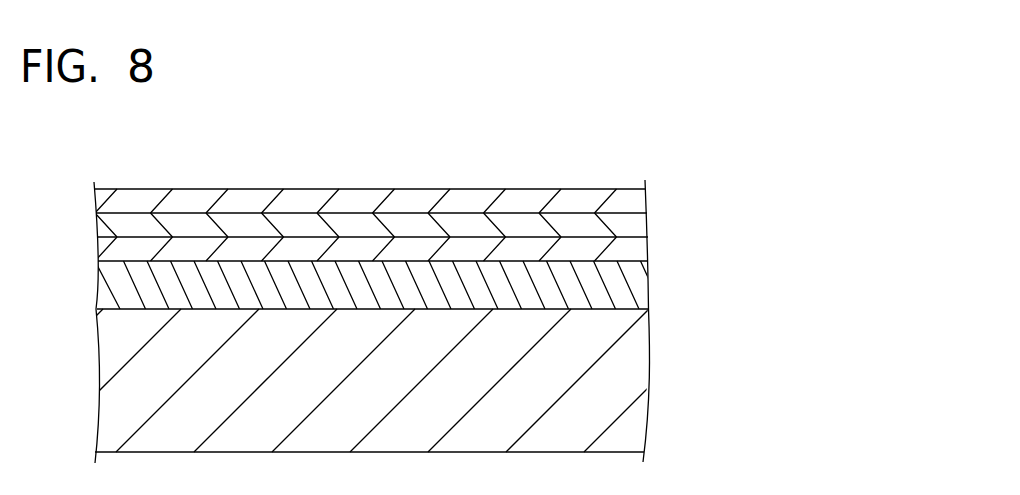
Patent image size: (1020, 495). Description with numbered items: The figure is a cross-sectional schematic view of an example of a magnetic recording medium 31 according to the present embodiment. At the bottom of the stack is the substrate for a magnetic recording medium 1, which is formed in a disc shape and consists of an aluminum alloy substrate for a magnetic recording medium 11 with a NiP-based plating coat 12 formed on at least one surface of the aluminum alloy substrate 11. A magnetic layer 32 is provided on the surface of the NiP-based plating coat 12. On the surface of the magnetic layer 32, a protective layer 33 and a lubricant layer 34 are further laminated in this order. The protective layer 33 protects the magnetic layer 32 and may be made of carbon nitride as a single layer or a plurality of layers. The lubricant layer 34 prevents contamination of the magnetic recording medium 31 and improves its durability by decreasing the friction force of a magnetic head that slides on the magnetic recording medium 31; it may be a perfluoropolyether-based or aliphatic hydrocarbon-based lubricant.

The magnetic recording medium 31 is at (578, 112).
The lubricant layer 34 is at (632, 198).
The protective layer 33 is at (628, 226).
The magnetic layer 32 is at (625, 247).
The substrate for a magnetic recording medium 1 is at (718, 272).
The NiP-based plating coat 12 is at (625, 285).
The aluminum alloy substrate for a magnetic recording medium 11 is at (625, 340).